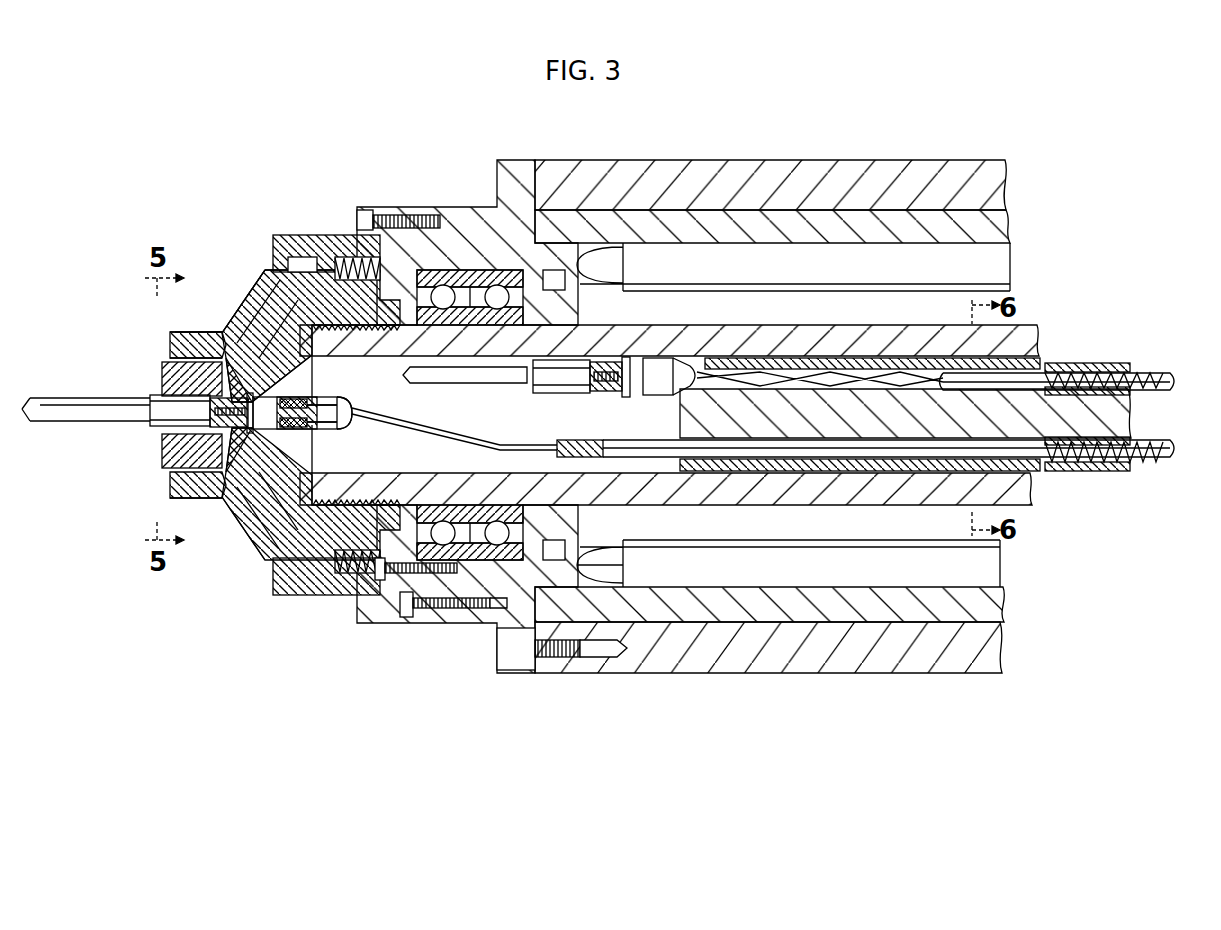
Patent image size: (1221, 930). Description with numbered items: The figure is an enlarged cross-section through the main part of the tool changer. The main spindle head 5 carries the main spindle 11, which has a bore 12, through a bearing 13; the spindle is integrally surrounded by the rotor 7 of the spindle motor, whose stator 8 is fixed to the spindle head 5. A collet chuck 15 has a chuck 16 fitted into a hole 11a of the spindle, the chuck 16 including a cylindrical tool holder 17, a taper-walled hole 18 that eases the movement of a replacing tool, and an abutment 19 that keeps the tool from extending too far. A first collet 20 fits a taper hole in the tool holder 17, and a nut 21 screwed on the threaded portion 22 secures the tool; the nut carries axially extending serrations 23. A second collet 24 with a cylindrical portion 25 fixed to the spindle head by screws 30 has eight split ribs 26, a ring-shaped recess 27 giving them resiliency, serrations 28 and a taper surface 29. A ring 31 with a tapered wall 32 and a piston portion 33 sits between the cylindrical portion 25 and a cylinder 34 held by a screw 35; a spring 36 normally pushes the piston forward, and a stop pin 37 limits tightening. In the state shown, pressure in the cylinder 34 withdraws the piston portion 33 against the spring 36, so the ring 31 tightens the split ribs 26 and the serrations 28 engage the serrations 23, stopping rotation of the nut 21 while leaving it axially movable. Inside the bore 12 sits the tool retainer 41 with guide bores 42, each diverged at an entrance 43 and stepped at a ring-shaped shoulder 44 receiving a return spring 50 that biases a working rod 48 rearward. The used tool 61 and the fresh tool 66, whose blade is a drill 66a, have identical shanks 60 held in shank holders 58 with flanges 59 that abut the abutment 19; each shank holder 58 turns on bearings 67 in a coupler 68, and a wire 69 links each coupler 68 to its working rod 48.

The main spindle head 5 is at (898, 175).
The rotor 7 is at (815, 545).
The stator 8 is at (808, 250).
The main spindle 11 is at (862, 540).
The hole 11a is at (320, 483).
The bore 12 is at (655, 475).
The bearing 13 is at (497, 284).
The collet chuck 15 is at (137, 320).
The chuck 16 is at (255, 345).
The cylindrical tool holder 17 is at (214, 348).
The taper-walled hole 18 is at (314, 362).
The abutment 19 is at (290, 378).
The first collet 20 is at (162, 376).
The nut 21 is at (162, 452).
The threaded portion 22 is at (262, 512).
The serrations 23 is at (173, 493).
The second collet 24 is at (262, 318).
The cylindrical portion 25 is at (295, 282).
The split ribs 26 is at (220, 478).
The ring-shaped recess 27 is at (232, 480).
The serrations 28 is at (172, 478).
The taper surface 29 is at (170, 350).
The screws 30 is at (385, 620).
The ring 31 is at (187, 327).
The tapered wall 32 is at (180, 357).
The piston portion 33 is at (278, 240).
The cylinder 34 is at (305, 258).
The screw 35 is at (410, 214).
The spring 36 is at (352, 262).
The stop pin 37 is at (358, 570).
The tool retainer 41 is at (785, 470).
The guide bores 42 is at (800, 357).
The entrance 43 is at (700, 356).
The ring-shaped shoulder 44 is at (1050, 362).
The working rod 48 is at (627, 462).
The return spring 50 is at (1140, 372).
The shank holder 58 is at (640, 360).
The flange 59 is at (626, 355).
The shank 60 is at (150, 408).
The tool 61 is at (105, 425).
The tool 66 is at (535, 385).
The drill 66a is at (460, 384).
The bearings 67 is at (340, 428).
The coupler 68 is at (355, 414).
The wire 69 is at (460, 437).